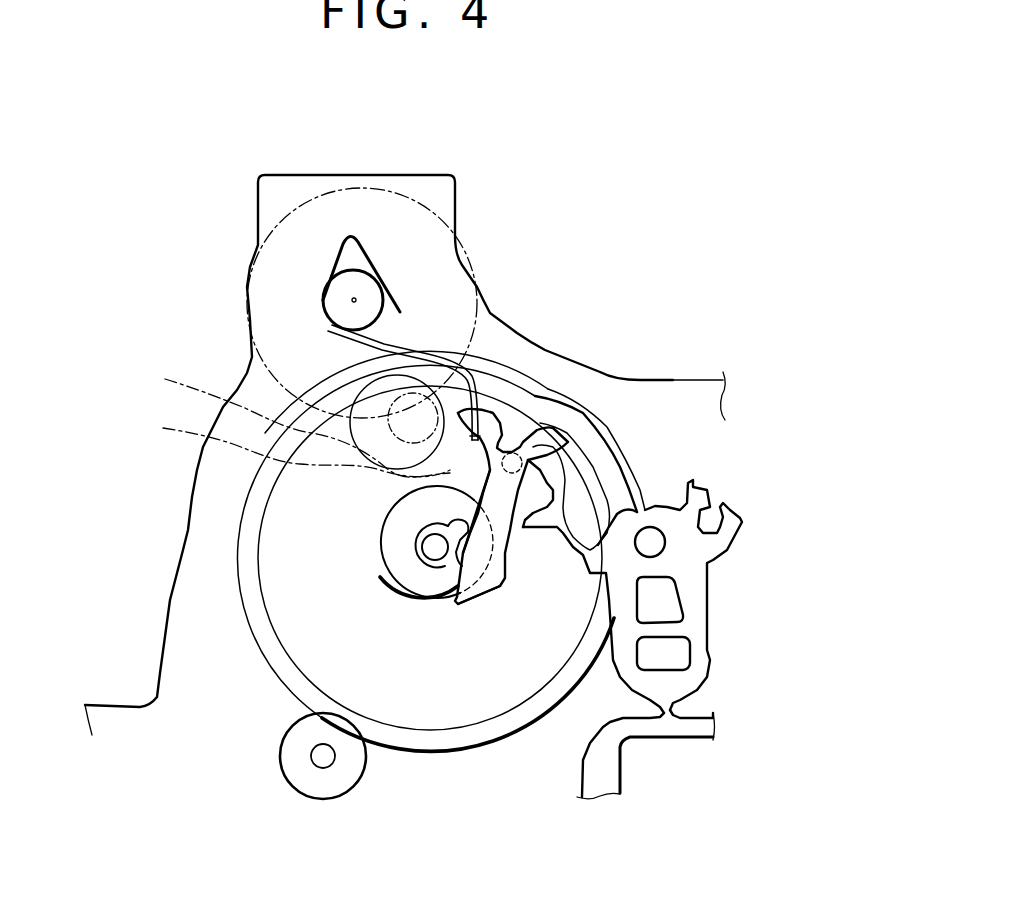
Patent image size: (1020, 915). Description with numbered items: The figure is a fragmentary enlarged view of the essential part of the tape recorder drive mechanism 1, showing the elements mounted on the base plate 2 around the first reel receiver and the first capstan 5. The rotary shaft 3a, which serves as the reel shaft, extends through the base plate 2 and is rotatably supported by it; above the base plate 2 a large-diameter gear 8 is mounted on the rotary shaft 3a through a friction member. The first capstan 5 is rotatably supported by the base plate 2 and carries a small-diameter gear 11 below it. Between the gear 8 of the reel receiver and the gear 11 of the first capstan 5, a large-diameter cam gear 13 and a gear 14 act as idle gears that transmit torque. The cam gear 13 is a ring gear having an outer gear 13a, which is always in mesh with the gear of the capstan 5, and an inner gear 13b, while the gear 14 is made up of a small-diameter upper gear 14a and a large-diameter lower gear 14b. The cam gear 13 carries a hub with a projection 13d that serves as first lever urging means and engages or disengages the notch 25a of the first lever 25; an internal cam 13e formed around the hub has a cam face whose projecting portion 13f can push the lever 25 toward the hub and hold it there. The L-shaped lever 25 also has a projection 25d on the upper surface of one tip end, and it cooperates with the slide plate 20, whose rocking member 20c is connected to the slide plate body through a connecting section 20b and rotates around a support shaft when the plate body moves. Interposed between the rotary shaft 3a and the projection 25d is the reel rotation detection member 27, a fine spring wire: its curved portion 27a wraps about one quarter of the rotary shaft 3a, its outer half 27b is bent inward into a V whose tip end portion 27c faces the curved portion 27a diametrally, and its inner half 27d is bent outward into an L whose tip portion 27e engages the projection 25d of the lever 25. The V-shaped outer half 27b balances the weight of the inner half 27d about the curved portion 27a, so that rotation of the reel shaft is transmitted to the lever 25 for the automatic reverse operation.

The drive mechanism 1 is at (615, 196).
The base plate 2 is at (673, 372).
The rotary shaft 3a is at (357, 287).
The first capstan 5 is at (320, 760).
The large-diameter gear 8 is at (417, 200).
The small-diameter gear 11 is at (319, 798).
The cam gear 13 is at (572, 835).
The outer gear 13a is at (520, 733).
The inner gear 13b is at (458, 731).
The projection 13d is at (457, 520).
The internal cam 13e is at (362, 540).
The projecting portion 13f is at (380, 577).
The gear 14 is at (115, 355).
The upper gear 14a is at (281, 421).
The lower gear 14b is at (281, 443).
The slide plate 20 is at (669, 609).
The connecting section 20b is at (673, 712).
The rocking member 20c is at (693, 592).
The first lever 25 is at (520, 415).
The notch 25a is at (490, 490).
The projection 25d is at (478, 482).
The reel rotation detection member 27 is at (377, 257).
The curved portion 27a is at (323, 307).
The outer half 27b is at (327, 257).
The tip end portion 27c is at (385, 284).
The inner half 27d is at (393, 410).
The tip portion 27e is at (502, 410).